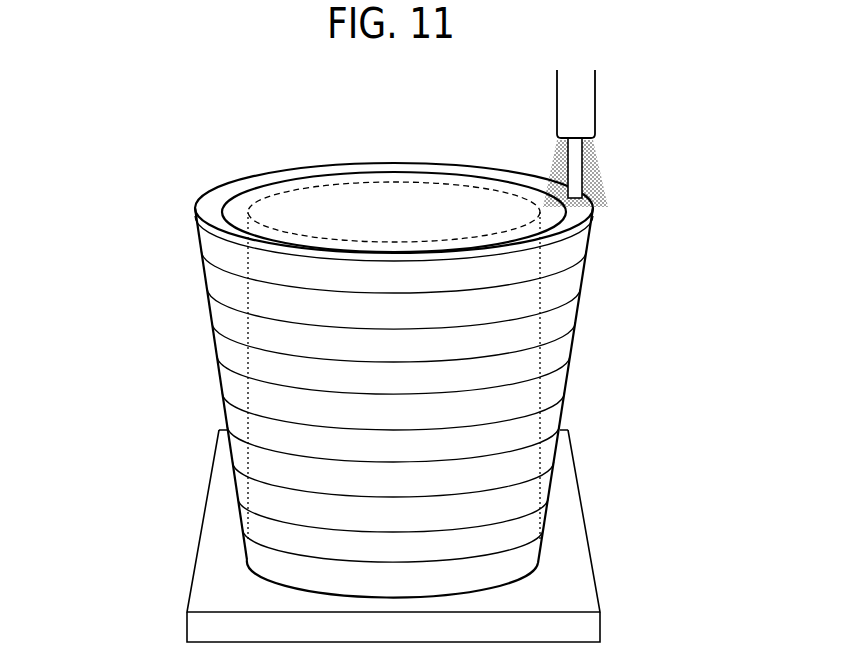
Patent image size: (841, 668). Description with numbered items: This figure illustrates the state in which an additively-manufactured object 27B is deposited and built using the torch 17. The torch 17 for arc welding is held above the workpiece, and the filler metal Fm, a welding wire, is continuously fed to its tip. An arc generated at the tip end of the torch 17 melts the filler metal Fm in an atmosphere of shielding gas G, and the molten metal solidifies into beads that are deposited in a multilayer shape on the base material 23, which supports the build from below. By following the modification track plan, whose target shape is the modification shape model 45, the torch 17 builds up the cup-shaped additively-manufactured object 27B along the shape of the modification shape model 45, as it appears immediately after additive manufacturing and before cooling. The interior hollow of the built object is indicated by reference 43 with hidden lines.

The torch 17 is at (583, 100).
The base material 23 is at (585, 587).
The hollow portion 43 is at (255, 201).
The modification shape model 45 is at (320, 380).
The additively-manufactured object 27B is at (196, 204).
The shielding gas G is at (560, 163).
The filler metal Fm is at (575, 168).